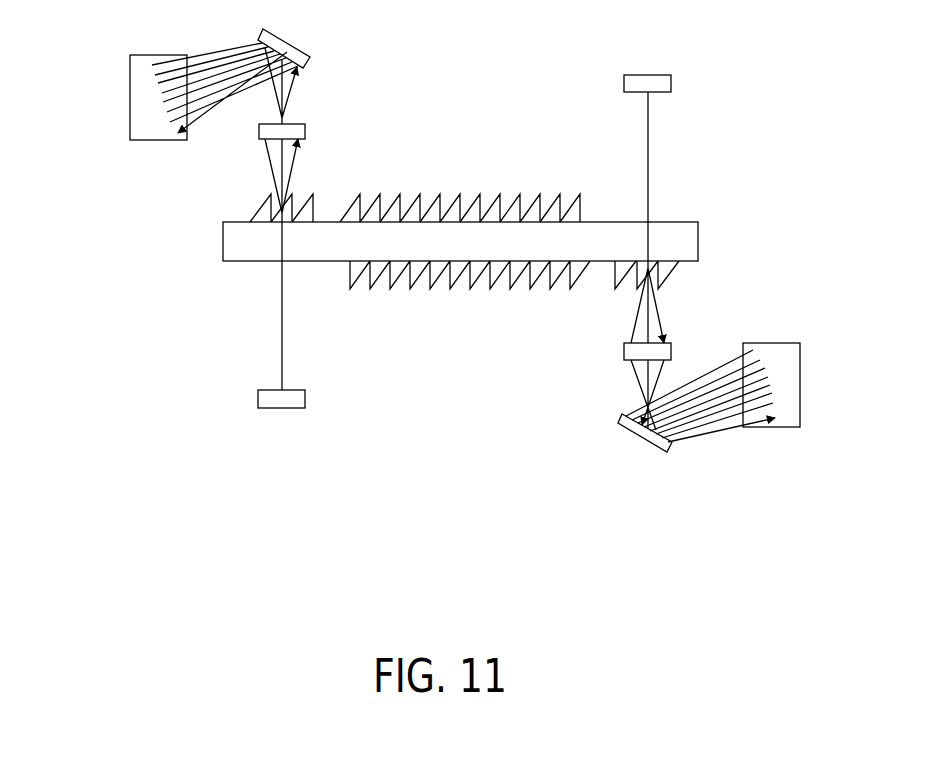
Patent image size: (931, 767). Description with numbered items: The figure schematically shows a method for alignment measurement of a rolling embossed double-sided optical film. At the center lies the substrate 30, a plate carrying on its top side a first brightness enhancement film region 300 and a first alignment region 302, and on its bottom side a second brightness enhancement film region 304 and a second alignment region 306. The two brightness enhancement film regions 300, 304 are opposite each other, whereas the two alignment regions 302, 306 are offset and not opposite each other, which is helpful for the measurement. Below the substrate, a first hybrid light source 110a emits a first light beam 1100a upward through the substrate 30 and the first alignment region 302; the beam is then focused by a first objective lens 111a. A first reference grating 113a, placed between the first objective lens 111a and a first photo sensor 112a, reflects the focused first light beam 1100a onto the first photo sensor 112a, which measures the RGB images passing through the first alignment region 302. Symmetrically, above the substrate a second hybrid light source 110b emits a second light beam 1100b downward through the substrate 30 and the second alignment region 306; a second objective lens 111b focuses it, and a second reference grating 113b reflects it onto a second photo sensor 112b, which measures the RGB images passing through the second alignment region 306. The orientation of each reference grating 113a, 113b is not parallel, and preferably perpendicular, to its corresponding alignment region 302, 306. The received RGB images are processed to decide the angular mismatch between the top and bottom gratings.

The substrate 30 is at (223, 242).
The first brightness enhancement film region 300 is at (513, 193).
The first alignment region 302 is at (265, 209).
The second brightness enhancement film region 304 is at (418, 288).
The second alignment region 306 is at (672, 275).
The first hybrid light source 110a is at (258, 392).
The second hybrid light source 110b is at (672, 82).
The first light beam 1100a is at (282, 323).
The second light beam 1100b is at (648, 183).
The first objective lens 111a is at (305, 127).
The second objective lens 111b is at (624, 347).
The first reference grating 113a is at (292, 42).
The second reference grating 113b is at (637, 433).
The first photo sensor 112a is at (131, 100).
The second photo sensor 112b is at (790, 427).